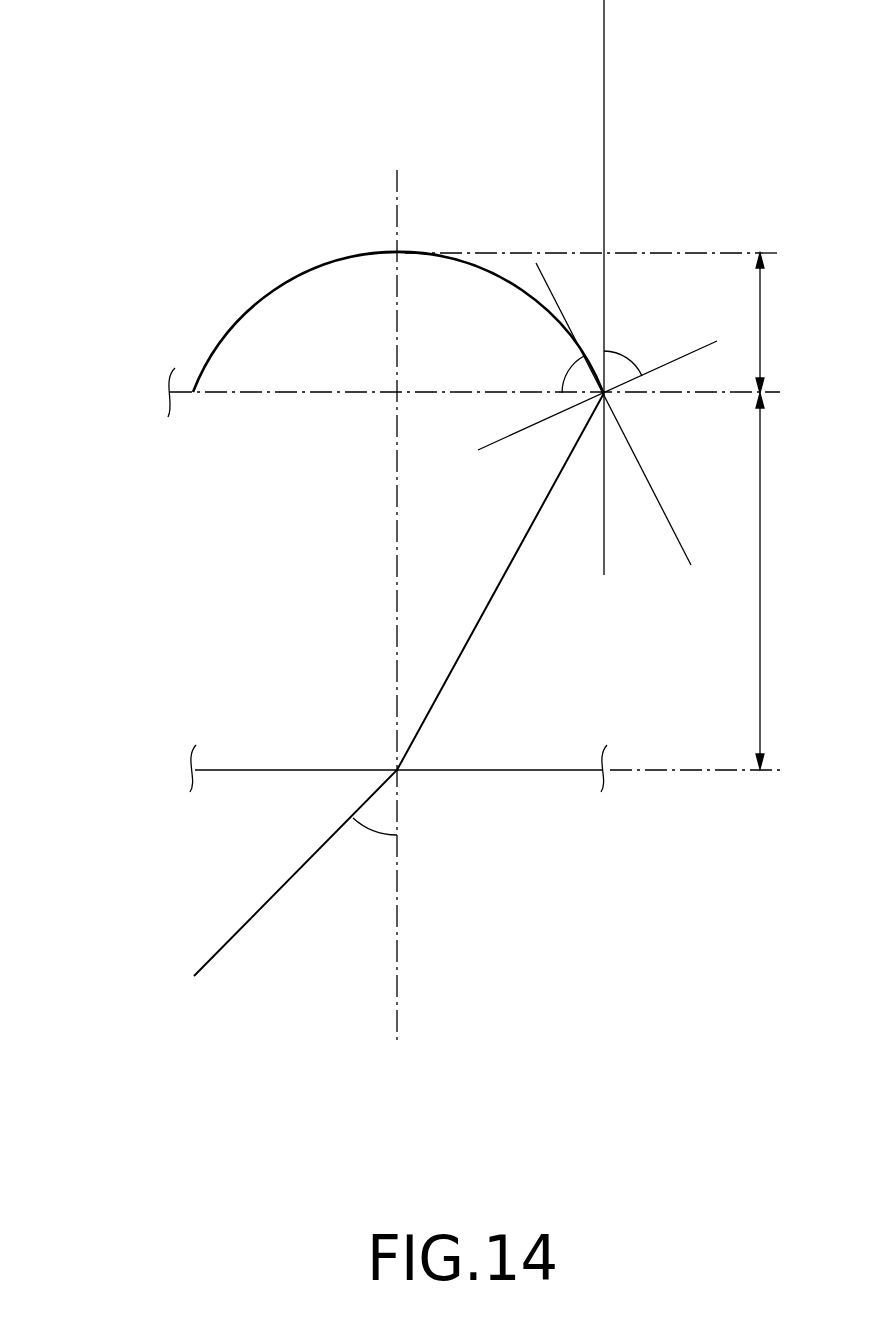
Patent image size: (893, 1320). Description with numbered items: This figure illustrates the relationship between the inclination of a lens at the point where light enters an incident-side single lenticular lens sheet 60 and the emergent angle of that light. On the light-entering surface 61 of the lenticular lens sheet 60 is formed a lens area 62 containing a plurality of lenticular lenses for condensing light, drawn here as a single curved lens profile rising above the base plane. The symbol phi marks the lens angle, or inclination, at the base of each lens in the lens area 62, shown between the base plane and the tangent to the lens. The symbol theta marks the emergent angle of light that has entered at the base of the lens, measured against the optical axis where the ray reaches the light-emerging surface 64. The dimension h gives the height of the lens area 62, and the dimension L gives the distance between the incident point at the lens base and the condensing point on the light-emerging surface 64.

The incident-side single lenticular lens sheet 60 is at (143, 520).
The light-entering surface 61 is at (205, 360).
The lens area 62 is at (272, 318).
The light-emerging surface 64 is at (497, 770).